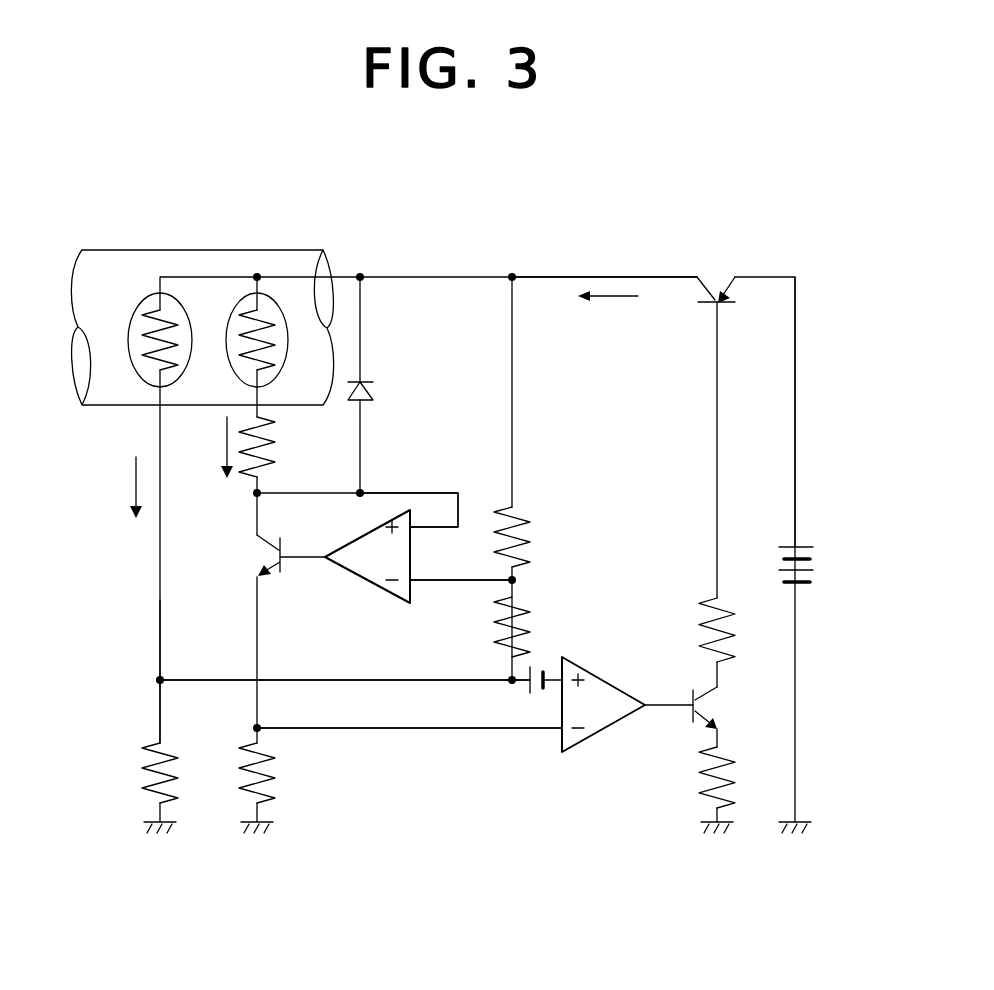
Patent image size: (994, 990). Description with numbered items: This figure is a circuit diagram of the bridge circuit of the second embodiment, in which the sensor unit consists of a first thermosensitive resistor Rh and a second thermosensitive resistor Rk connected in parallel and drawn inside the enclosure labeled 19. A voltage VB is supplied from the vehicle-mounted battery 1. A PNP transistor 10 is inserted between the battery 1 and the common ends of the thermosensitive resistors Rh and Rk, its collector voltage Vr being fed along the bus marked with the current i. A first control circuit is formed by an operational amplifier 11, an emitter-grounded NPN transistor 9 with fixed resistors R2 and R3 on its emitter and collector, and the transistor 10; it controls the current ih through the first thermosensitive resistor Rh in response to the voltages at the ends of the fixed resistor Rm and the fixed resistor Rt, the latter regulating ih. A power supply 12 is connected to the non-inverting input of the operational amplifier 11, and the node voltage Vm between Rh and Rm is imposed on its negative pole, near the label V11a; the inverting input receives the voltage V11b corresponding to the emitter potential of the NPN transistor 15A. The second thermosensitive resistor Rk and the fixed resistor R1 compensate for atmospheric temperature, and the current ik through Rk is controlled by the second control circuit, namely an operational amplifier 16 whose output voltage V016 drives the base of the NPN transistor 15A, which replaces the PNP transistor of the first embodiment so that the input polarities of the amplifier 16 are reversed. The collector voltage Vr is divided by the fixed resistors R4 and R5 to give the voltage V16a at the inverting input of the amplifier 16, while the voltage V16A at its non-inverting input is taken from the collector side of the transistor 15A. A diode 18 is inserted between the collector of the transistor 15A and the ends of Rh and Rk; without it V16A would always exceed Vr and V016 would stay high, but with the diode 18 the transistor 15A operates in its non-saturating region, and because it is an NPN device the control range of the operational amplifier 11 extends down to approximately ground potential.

The exhaust pipe 19 is at (222, 250).
The first thermosensitive resistor Rh is at (132, 325).
The second thermosensitive resistor Rk is at (230, 327).
The diode 18 is at (373, 390).
The fixed resistor R1 is at (275, 442).
The current ik is at (225, 445).
The current ih is at (135, 482).
The collector voltage Vr is at (562, 277).
The current i is at (608, 298).
The PNP transistor 10 is at (693, 288).
The voltage VB is at (795, 383).
The battery 1 is at (810, 545).
The NPN transistor 15A is at (258, 556).
The output voltage V016 is at (293, 552).
The operational amplifier 16 is at (350, 575).
The voltage V16A is at (405, 493).
The fixed resistor R4 is at (530, 528).
The fixed resistor R5 is at (528, 620).
The voltage V16a is at (445, 585).
The voltage V11a is at (392, 680).
The voltage Vm is at (158, 679).
The power supply 12 is at (532, 700).
The operational amplifier 11 is at (600, 738).
The voltage V11b is at (442, 735).
The NPN transistor 9 is at (720, 705).
The fixed resistor R3 is at (700, 630).
The fixed resistor R2 is at (705, 783).
The fixed resistor Rm is at (130, 778).
The fixed resistor Rt is at (278, 776).